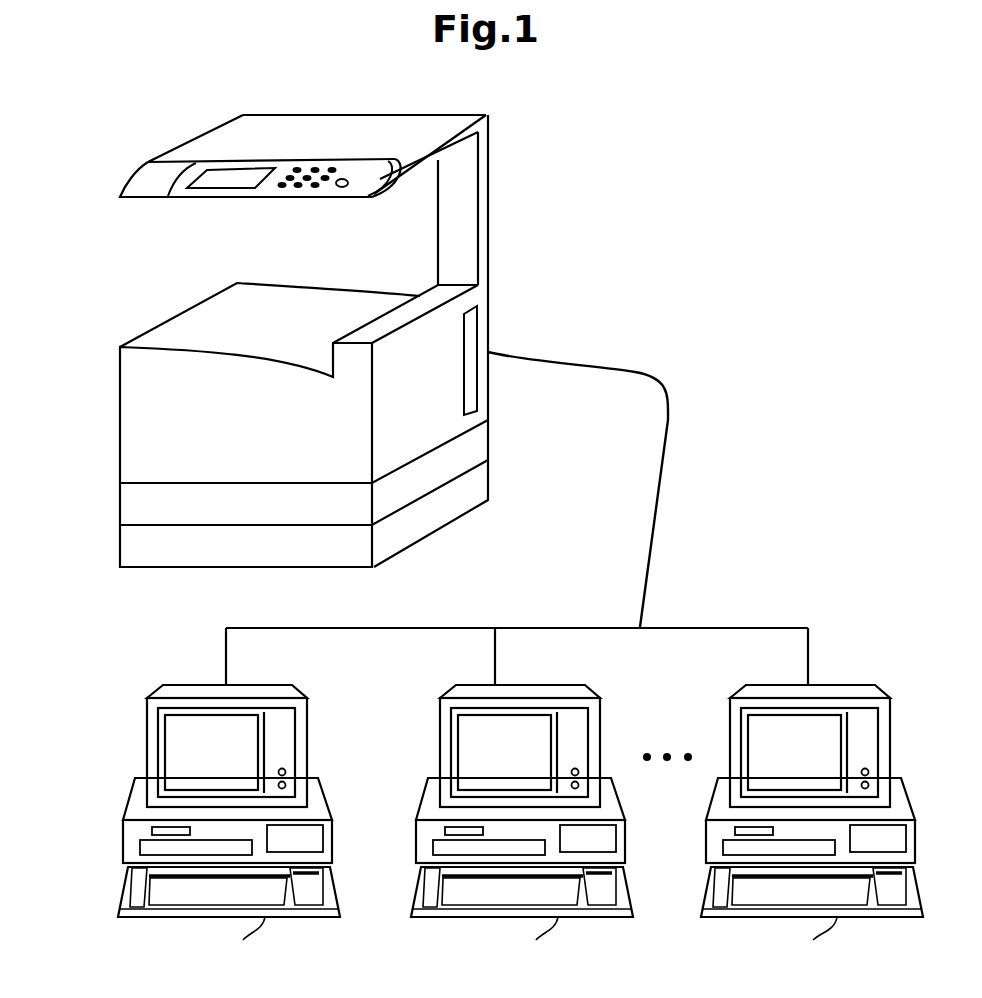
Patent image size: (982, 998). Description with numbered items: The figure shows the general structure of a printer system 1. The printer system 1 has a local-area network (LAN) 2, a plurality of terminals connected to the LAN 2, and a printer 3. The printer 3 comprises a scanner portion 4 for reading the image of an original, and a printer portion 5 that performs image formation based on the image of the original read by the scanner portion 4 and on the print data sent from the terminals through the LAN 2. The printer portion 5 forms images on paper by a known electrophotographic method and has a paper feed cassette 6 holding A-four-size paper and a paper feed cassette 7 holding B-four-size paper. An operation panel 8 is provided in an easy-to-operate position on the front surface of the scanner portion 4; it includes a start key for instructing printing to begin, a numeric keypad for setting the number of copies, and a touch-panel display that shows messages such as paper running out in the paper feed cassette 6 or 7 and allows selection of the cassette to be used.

The printer system 1 is at (686, 238).
The local-area network (LAN) 2 is at (660, 504).
The printer 3 is at (518, 204).
The scanner portion 4 is at (243, 113).
The printer portion 5 is at (114, 382).
The paper feed cassette 6 is at (132, 503).
The paper feed cassette 7 is at (132, 547).
The operation panel 8 is at (253, 198).